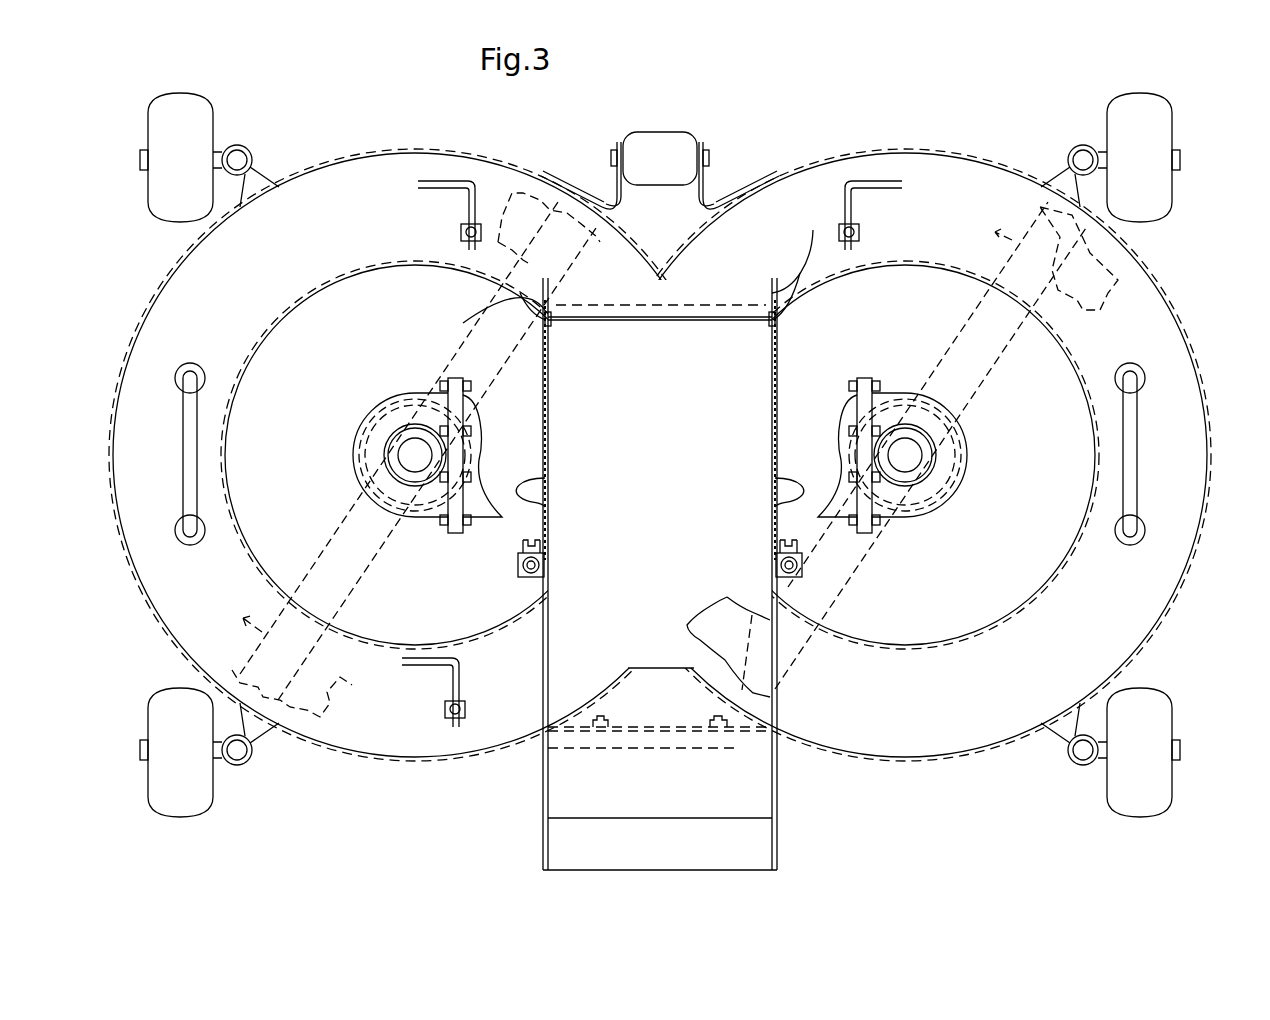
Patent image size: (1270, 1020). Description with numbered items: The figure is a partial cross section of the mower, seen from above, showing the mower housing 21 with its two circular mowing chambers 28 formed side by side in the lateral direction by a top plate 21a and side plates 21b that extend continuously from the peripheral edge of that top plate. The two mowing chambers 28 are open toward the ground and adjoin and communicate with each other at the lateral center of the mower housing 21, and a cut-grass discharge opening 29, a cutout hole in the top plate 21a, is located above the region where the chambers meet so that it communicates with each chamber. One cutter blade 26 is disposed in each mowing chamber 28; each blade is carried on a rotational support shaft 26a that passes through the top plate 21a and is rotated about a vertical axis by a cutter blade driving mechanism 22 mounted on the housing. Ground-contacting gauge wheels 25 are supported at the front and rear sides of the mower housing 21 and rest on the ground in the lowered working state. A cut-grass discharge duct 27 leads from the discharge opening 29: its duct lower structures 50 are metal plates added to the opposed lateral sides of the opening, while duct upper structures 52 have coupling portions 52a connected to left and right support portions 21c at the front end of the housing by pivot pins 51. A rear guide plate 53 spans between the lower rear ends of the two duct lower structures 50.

The mower housing 21 is at (677, 417).
The top plate 21a is at (200, 308).
The side plates 21b is at (915, 148).
The support portions 21c is at (463, 320).
The cutter blade driving mechanism 22 is at (362, 420).
The ground-contacting gauge wheels 25 is at (170, 118).
The cutter blade 26 is at (268, 600).
The rotational support shaft 26a is at (415, 445).
The cut-grass discharge duct 27 is at (542, 770).
The mowing chambers 28 is at (746, 474).
The cut-grass discharge opening 29 is at (643, 350).
The duct lower structures 50 is at (550, 440).
The pivot pins 51 is at (556, 318).
The duct upper structures 52 is at (548, 480).
The coupling portions 52a is at (552, 310).
The rear guide plate 53 is at (660, 668).